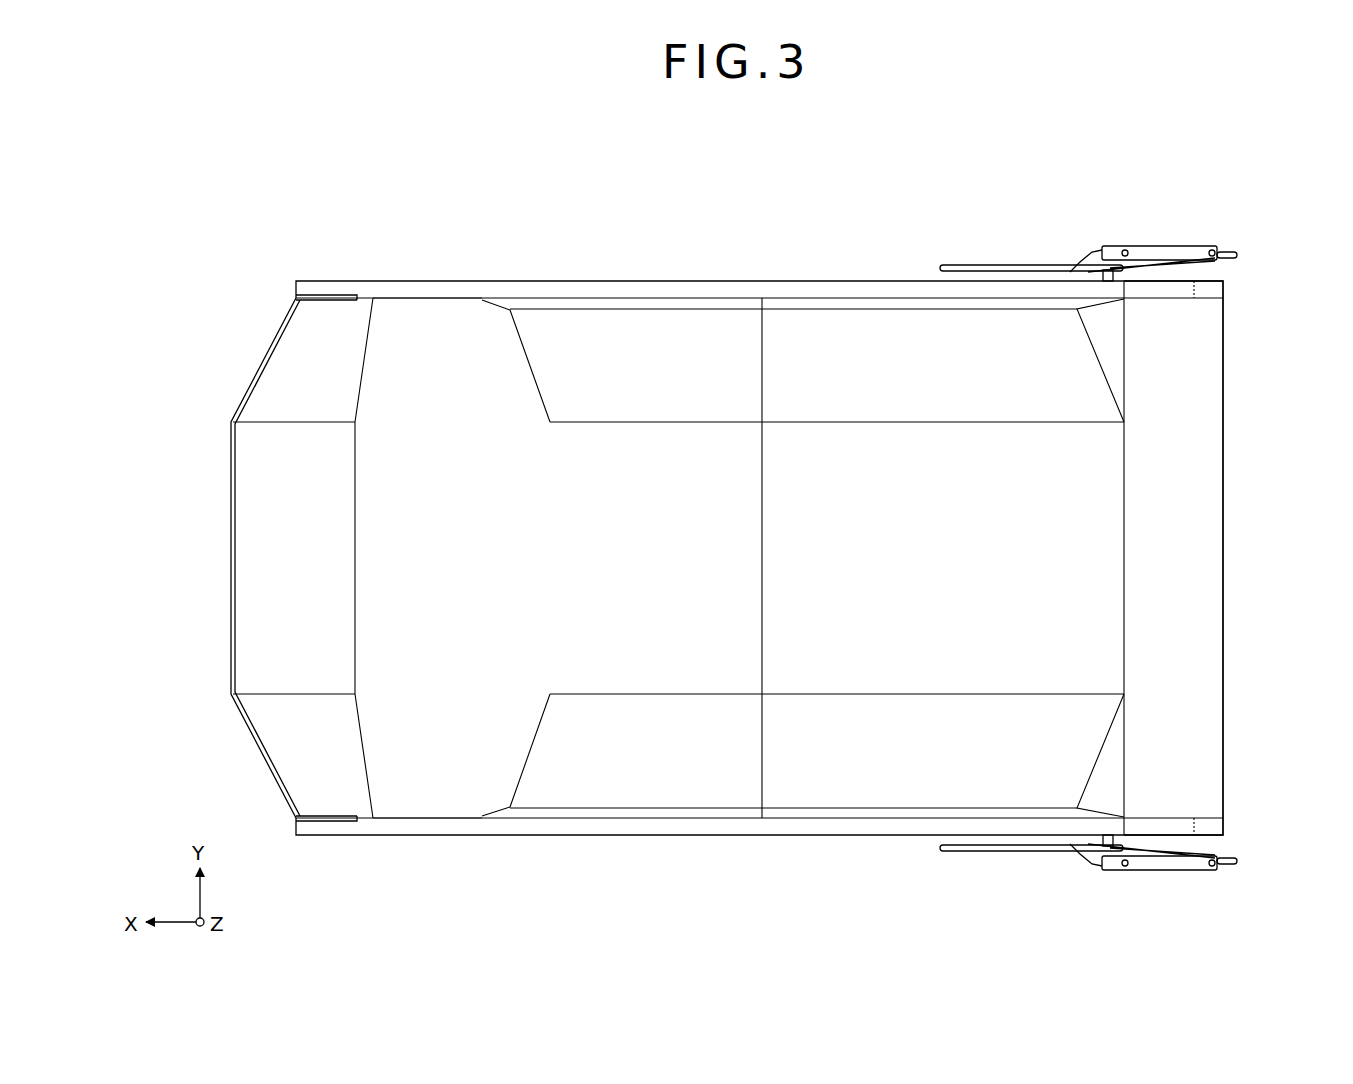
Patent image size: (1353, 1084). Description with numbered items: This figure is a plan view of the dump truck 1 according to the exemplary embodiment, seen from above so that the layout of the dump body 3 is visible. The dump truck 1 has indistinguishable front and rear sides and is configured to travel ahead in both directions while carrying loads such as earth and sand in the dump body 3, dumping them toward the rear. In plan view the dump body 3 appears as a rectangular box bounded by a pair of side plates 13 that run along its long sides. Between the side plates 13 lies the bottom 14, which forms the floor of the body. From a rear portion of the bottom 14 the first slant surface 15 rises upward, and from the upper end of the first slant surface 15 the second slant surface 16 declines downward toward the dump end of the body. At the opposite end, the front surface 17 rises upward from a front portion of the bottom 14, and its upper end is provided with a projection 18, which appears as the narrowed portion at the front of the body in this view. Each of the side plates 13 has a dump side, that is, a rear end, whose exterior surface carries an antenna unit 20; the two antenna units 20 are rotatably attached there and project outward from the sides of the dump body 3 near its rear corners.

The dump truck 1 is at (952, 168).
The dump body 3 is at (650, 283).
The side plates 13 is at (771, 287).
The bottom 14 is at (650, 465).
The first slant surface 15 is at (840, 363).
The second slant surface 16 is at (1208, 488).
The front surface 17 is at (415, 372).
The projection 18 is at (281, 412).
The antenna unit 20 is at (1144, 214).